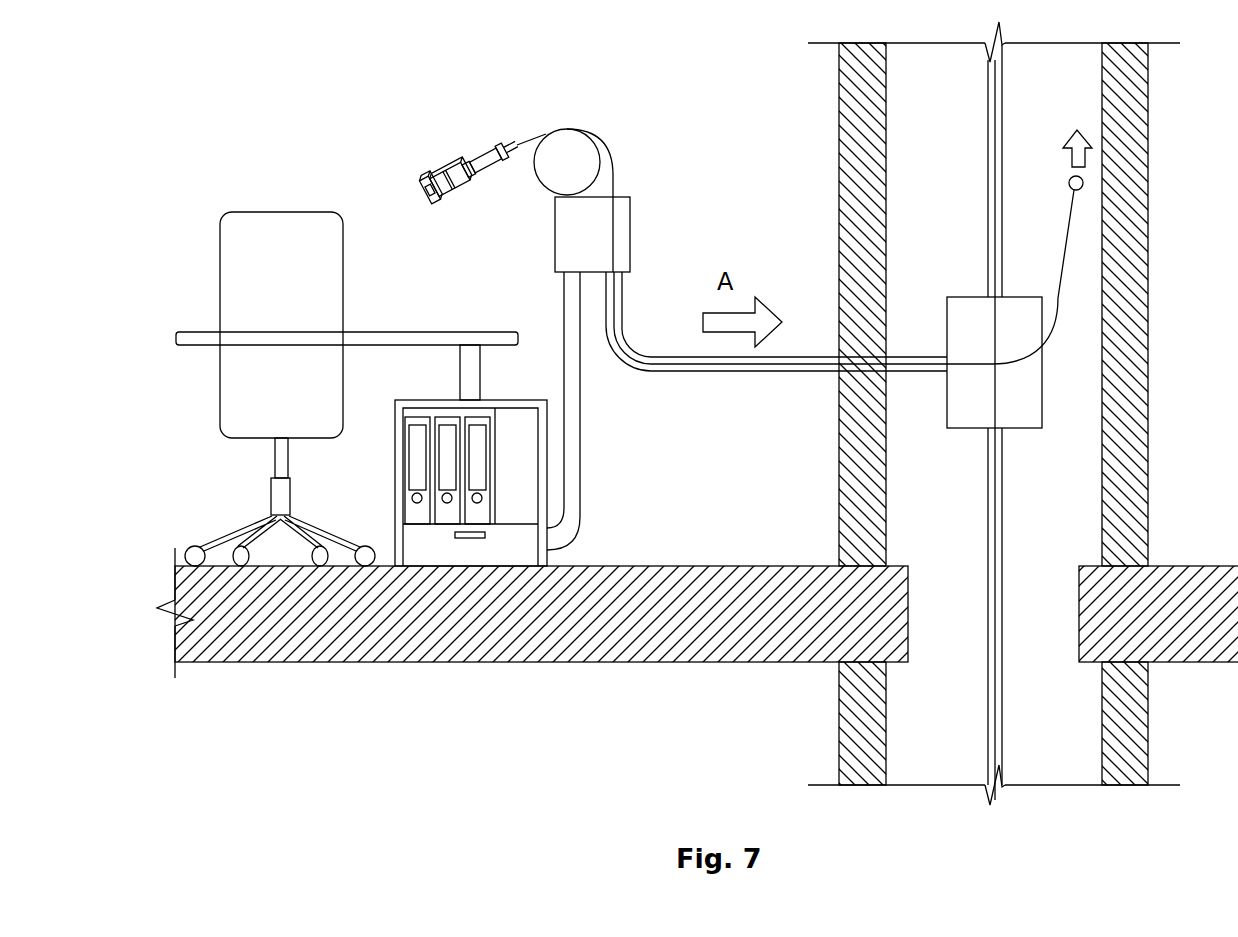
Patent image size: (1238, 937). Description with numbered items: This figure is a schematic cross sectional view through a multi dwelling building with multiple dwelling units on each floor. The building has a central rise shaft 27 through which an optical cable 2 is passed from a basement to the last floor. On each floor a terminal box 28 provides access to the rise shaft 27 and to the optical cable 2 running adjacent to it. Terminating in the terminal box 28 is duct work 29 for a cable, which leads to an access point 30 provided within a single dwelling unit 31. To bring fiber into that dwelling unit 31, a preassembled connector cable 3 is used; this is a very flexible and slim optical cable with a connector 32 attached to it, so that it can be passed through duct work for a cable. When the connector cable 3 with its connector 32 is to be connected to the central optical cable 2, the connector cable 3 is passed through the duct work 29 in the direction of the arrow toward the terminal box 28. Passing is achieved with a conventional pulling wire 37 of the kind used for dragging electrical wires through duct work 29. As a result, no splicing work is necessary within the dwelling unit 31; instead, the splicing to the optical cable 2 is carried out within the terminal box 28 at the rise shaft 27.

The optical cable 2 is at (990, 173).
The connector cable 3 is at (585, 128).
The rise shaft 27 is at (950, 128).
The terminal box 28 is at (957, 412).
The duct work 29 is at (907, 350).
The access point 30 is at (644, 212).
The dwelling unit 31 is at (283, 190).
The connector 32 is at (423, 158).
The pulling wire 37 is at (1068, 226).